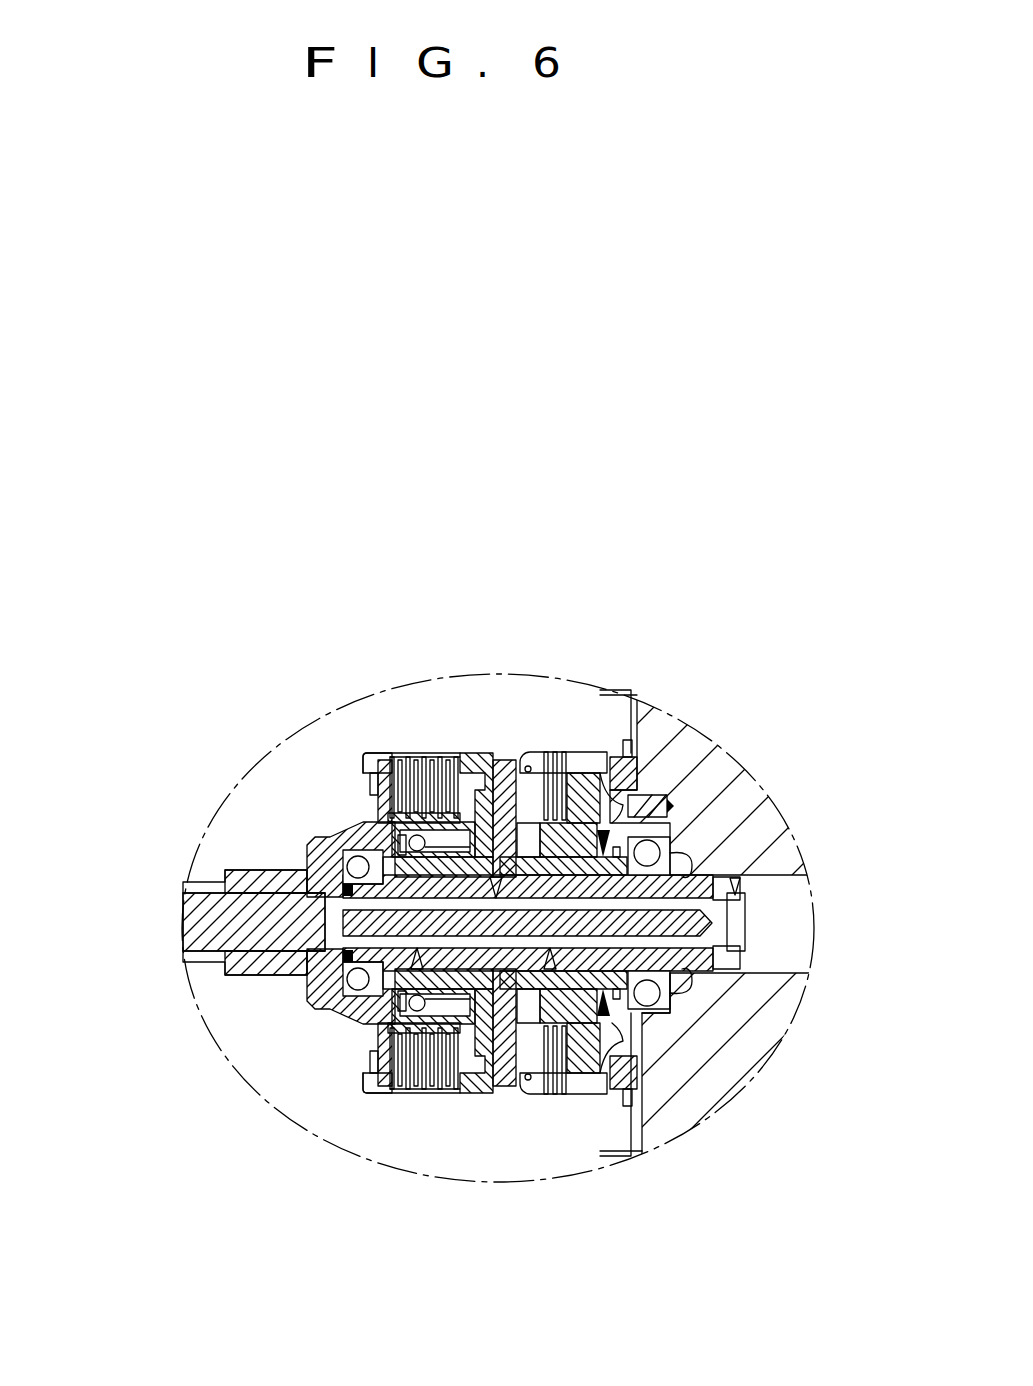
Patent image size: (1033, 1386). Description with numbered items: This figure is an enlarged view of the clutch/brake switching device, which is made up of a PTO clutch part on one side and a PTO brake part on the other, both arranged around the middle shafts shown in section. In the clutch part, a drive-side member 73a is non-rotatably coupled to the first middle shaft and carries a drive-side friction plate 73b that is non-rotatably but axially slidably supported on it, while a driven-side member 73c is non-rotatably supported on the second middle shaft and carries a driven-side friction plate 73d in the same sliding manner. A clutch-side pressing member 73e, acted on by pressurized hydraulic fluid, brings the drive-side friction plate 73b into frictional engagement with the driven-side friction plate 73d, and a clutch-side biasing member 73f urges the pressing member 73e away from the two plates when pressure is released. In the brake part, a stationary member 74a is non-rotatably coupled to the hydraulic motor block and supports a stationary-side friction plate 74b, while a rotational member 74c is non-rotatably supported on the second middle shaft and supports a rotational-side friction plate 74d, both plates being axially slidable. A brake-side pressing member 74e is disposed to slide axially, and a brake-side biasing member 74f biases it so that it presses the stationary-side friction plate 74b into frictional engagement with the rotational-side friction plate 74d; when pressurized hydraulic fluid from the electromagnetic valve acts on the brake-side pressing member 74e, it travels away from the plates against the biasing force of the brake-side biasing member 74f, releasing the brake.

The drive-side member 73a is at (320, 843).
The drive-side friction plate 73b is at (417, 835).
The driven-side member 73c is at (478, 758).
The driven-side friction plate 73d is at (452, 760).
The clutch-side pressing member 73e is at (510, 790).
The clutch-side biasing member 73f is at (386, 787).
The stationary member 74a is at (623, 1140).
The stationary-side friction plate 74b is at (571, 1070).
The rotational member 74c is at (503, 1075).
The rotational-side friction plate 74d is at (552, 1075).
The brake-side pressing member 74e is at (580, 1045).
The brake-side biasing member 74f is at (672, 804).